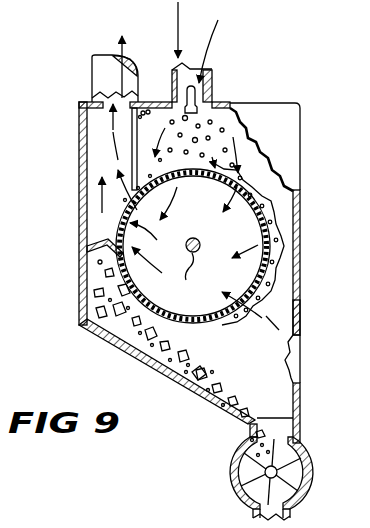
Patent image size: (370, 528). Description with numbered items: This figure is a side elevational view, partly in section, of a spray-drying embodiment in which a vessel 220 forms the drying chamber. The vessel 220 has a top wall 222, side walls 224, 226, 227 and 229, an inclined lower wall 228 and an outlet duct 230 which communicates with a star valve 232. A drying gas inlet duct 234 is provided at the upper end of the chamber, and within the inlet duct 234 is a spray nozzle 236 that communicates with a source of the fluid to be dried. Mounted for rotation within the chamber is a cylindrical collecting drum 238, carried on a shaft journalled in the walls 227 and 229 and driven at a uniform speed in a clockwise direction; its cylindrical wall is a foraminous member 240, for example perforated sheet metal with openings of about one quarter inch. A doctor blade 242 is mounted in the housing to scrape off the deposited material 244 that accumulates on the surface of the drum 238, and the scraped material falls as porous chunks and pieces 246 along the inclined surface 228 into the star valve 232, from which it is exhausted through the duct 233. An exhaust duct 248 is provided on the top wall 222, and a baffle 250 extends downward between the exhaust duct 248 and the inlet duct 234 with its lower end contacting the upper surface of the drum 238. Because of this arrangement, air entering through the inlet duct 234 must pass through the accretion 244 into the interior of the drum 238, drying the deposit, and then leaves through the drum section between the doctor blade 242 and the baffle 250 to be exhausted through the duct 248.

The vessel 220 is at (186, 110).
The top wall 222 is at (290, 103).
The side wall 224 is at (80, 190).
The side wall 226 is at (298, 256).
The side wall 227 is at (292, 372).
The inclined lower wall 228 is at (168, 378).
The side wall 229 is at (282, 304).
The outlet duct 230 is at (249, 425).
The star valve 232 is at (254, 473).
The duct 233 is at (252, 512).
The drying gas inlet duct 234 is at (201, 56).
The spray nozzle 236 is at (126, 268).
The rotary drum 238 is at (201, 253).
The foraminous member 240 is at (118, 223).
The doctor blade 242 is at (90, 249).
The deposited material 244 is at (268, 198).
The porous chunks and pieces 246 is at (227, 368).
The exhaust duct 248 is at (92, 74).
The baffle 250 is at (133, 150).